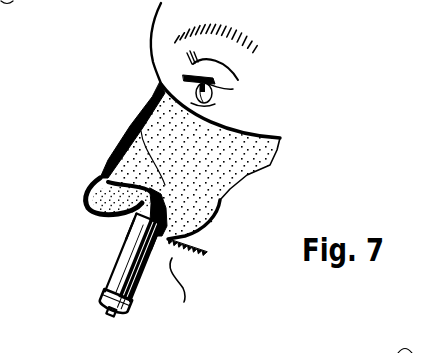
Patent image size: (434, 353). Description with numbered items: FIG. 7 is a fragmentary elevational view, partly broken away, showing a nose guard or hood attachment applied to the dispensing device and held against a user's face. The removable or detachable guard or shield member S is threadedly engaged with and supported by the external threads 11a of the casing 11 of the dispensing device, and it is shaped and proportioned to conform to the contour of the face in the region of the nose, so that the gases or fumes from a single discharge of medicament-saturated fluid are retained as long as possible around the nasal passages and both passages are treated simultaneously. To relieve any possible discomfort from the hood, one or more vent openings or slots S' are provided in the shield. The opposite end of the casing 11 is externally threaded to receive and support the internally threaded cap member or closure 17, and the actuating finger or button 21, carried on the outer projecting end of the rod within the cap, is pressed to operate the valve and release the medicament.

The guard or shield member S is at (196, 165).
The vent openings or slots S' is at (107, 207).
The casing 11 is at (112, 266).
The external threads 11a is at (135, 233).
The cap member or closure 17 is at (100, 299).
The actuating finger or button 21 is at (108, 314).